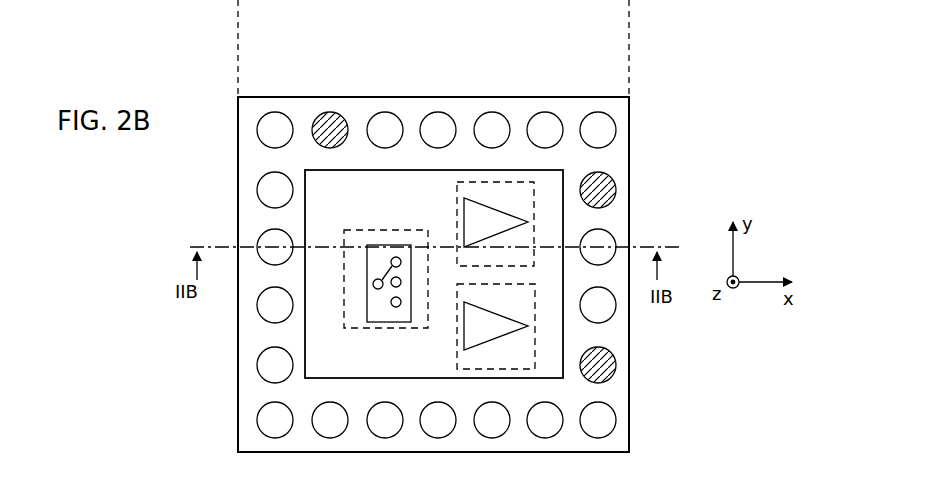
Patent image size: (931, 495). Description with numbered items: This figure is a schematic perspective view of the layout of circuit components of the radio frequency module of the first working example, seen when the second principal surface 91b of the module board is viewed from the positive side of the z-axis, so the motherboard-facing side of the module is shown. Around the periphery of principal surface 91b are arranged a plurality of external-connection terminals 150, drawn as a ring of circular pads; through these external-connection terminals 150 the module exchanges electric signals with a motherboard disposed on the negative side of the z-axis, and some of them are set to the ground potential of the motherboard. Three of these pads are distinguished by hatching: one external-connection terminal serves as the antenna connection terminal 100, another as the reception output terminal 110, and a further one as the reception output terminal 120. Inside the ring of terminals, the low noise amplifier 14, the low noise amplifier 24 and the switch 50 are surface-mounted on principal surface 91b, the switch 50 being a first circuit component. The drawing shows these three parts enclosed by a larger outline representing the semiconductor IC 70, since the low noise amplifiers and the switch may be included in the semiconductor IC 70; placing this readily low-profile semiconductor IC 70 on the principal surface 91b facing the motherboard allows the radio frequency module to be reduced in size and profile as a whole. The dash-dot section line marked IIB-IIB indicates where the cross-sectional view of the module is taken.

The principal surface 91b is at (620, 143).
The antenna connection terminal 100 is at (325, 113).
The reception output terminal 110 is at (606, 174).
The reception output terminal 120 is at (614, 357).
The external-connection terminal 150 is at (262, 260).
The semiconductor IC 70 is at (355, 378).
The switch 50 is at (372, 229).
The low noise amplifier 14 is at (456, 208).
The low noise amplifier 24 is at (456, 325).